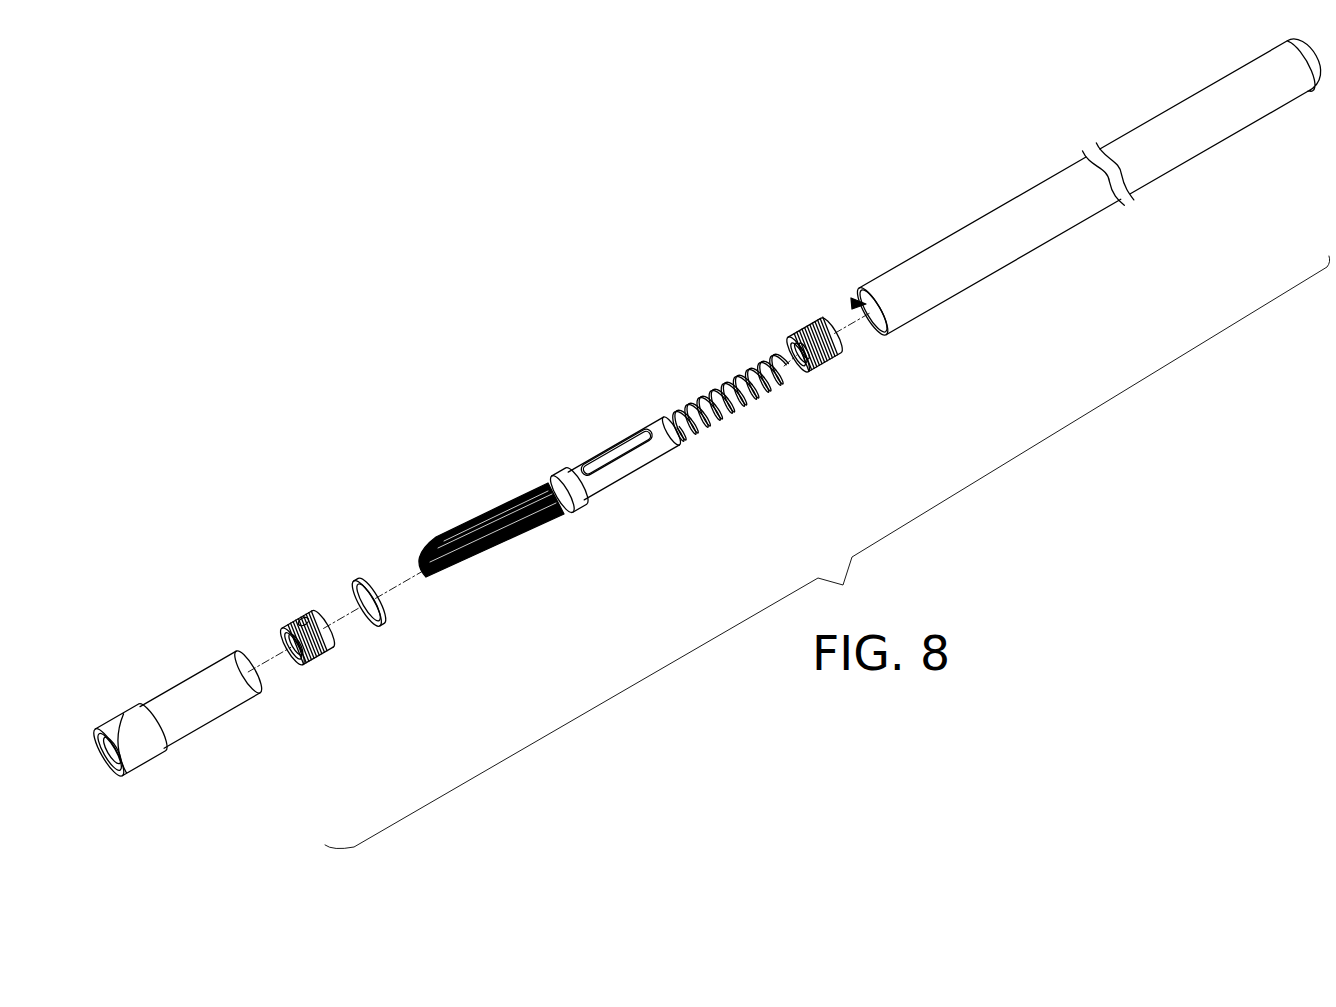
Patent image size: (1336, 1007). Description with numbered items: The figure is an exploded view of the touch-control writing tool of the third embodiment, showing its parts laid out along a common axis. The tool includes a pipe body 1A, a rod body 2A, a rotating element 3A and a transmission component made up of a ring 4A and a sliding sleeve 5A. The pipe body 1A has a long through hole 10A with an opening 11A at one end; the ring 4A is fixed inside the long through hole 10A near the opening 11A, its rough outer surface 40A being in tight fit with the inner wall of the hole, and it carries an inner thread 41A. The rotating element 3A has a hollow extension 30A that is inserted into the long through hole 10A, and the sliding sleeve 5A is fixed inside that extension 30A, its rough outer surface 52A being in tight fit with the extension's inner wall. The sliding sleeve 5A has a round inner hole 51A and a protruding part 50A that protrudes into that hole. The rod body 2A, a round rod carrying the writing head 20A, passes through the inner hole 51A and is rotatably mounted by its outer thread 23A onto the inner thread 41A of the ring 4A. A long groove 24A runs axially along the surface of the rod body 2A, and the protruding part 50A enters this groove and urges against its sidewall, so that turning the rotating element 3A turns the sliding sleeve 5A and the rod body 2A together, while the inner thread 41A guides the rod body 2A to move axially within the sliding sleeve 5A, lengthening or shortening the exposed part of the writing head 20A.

The pipe body 1A is at (1067, 212).
The long through hole 10A is at (849, 303).
The opening 11A is at (880, 327).
The rod body 2A is at (628, 463).
The writing head 20A is at (510, 545).
The outer thread 23A is at (709, 390).
The long groove 24A is at (603, 457).
The rotating element 3A is at (140, 723).
The extension 30A is at (225, 705).
The ring 4A is at (808, 372).
The outer surface 40A is at (832, 352).
The inner thread 41A is at (783, 345).
The sliding sleeve 5A is at (303, 668).
The protruding part 50A is at (308, 620).
The inner hole 51A is at (277, 642).
The outer surface 52A is at (337, 638).